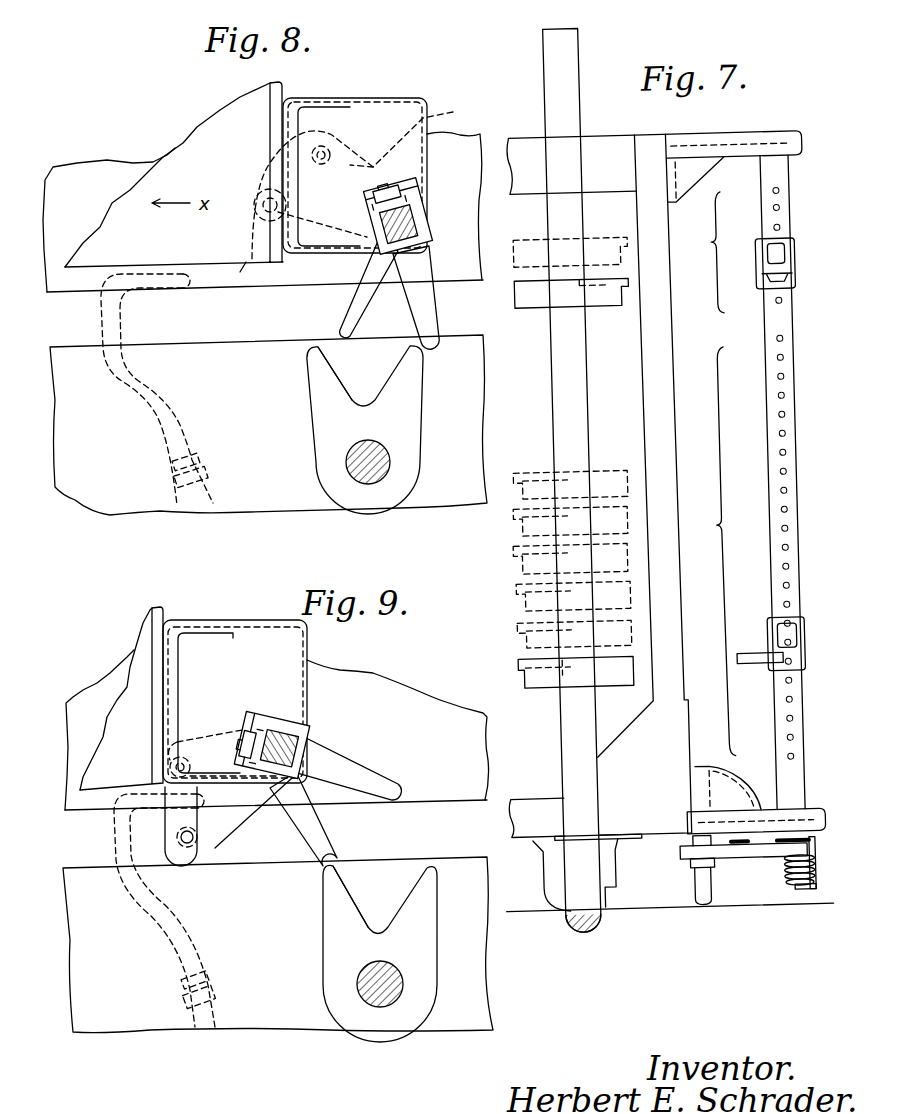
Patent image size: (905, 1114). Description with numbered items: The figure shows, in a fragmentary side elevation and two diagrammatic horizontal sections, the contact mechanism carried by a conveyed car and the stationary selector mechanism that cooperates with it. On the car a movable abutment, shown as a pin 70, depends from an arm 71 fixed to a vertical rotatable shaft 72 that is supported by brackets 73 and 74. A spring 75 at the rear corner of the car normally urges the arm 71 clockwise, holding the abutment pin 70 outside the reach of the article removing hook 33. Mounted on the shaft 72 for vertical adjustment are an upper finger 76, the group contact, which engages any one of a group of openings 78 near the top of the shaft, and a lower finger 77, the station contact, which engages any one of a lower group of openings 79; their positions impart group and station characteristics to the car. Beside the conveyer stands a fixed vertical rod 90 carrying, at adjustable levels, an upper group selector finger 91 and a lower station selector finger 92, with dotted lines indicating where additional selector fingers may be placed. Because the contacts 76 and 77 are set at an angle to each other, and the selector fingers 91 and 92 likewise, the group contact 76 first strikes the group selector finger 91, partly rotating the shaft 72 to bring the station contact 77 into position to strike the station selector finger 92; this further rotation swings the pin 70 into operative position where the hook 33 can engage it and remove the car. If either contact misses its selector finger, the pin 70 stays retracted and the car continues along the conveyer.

In FIG. 8, the hook 33 is at (128, 318).
In FIG. 8, the pin 70 is at (229, 275).
In FIG. 9, the pin 70 is at (193, 837).
In FIG. 7, the pin 70 is at (690, 882).
In FIG. 8, the arm 71 is at (366, 175).
In FIG. 7, the arm 71 is at (714, 850).
In FIG. 8, the vertical rotatable shaft 72 is at (403, 220).
In FIG. 9, the vertical rotatable shaft 72 is at (307, 743).
In FIG. 7, the vertical rotatable shaft 72 is at (784, 777).
In FIG. 7, the bracket 73 is at (782, 115).
In FIG. 8, the bracket 74 is at (323, 118).
In FIG. 9, the bracket 74 is at (235, 701).
In FIG. 7, the bracket 74 is at (806, 814).
In FIG. 7, the spring 75 is at (764, 862).
In FIG. 8, the upper finger 76 is at (416, 297).
In FIG. 9, the upper finger 76 is at (347, 769).
In FIG. 7, the upper finger 76 is at (797, 280).
In FIG. 8, the lower finger 77 is at (369, 289).
In FIG. 9, the lower finger 77 is at (303, 819).
In FIG. 7, the lower finger 77 is at (797, 656).
In FIG. 7, the group of openings 78 is at (702, 253).
In FIG. 7, the lower group of openings 79 is at (712, 552).
In FIG. 8, the vertical rod 90 is at (378, 472).
In FIG. 9, the vertical rod 90 is at (391, 992).
In FIG. 7, the vertical rod 90 is at (572, 46).
In FIG. 8, the group selector finger 91 is at (365, 430).
In FIG. 9, the group selector finger 91 is at (380, 953).
In FIG. 7, the group selector finger 91 is at (600, 298).
In FIG. 8, the station selector finger 92 is at (332, 377).
In FIG. 9, the station selector finger 92 is at (347, 898).
In FIG. 7, the station selector finger 92 is at (605, 675).